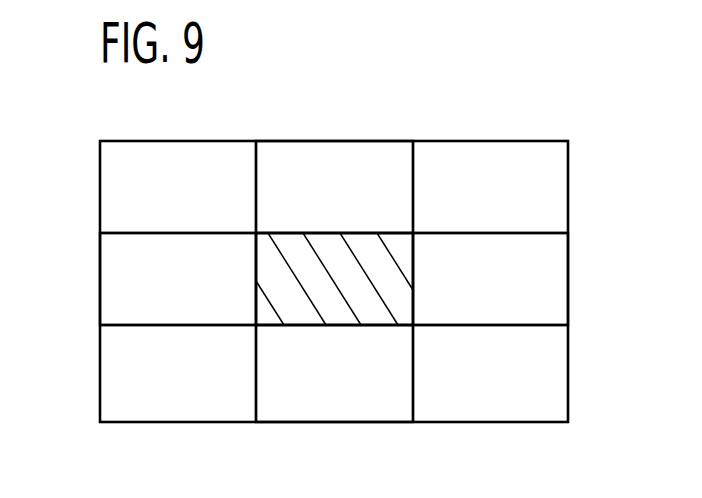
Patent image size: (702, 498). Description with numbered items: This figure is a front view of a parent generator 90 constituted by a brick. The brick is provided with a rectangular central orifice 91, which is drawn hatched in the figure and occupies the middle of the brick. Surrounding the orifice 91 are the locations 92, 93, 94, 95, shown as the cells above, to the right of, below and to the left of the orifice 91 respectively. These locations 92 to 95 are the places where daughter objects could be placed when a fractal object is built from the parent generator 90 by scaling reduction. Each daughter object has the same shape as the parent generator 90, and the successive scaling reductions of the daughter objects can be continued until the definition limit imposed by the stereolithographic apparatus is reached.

The parent generator 90 is at (446, 106).
The rectangular central orifice 91 is at (280, 262).
The location 92 is at (338, 163).
The location 93 is at (532, 297).
The location 94 is at (370, 393).
The location 95 is at (132, 308).